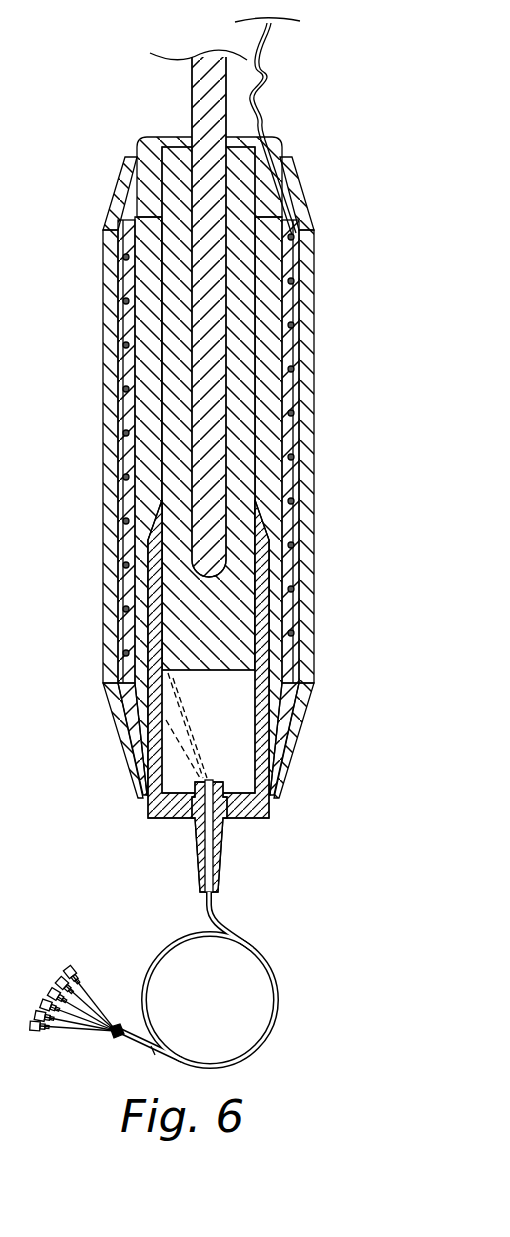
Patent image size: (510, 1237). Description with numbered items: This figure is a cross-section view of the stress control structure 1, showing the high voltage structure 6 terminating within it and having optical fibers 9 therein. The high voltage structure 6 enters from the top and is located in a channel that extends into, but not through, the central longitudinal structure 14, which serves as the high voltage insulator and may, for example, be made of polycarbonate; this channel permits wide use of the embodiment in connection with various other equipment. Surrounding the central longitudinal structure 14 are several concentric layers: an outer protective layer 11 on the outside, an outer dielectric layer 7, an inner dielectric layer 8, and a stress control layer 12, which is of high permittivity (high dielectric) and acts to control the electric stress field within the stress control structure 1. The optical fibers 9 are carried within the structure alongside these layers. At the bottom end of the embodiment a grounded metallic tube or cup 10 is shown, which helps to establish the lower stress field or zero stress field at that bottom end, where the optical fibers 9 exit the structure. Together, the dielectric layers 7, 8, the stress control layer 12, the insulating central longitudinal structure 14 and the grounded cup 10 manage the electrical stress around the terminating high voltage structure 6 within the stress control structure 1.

The stress control structure 1 is at (78, 292).
The high voltage structure 6 is at (200, 99).
The outer dielectric layer 7 is at (298, 259).
The inner dielectric layer 8 is at (297, 432).
The optical fibers 9 is at (297, 305).
The grounded metallic tube or cup 10 is at (265, 603).
The outer protective layer 11 is at (303, 196).
The stress control layer 12 is at (265, 480).
The central longitudinal structure 14 is at (242, 395).